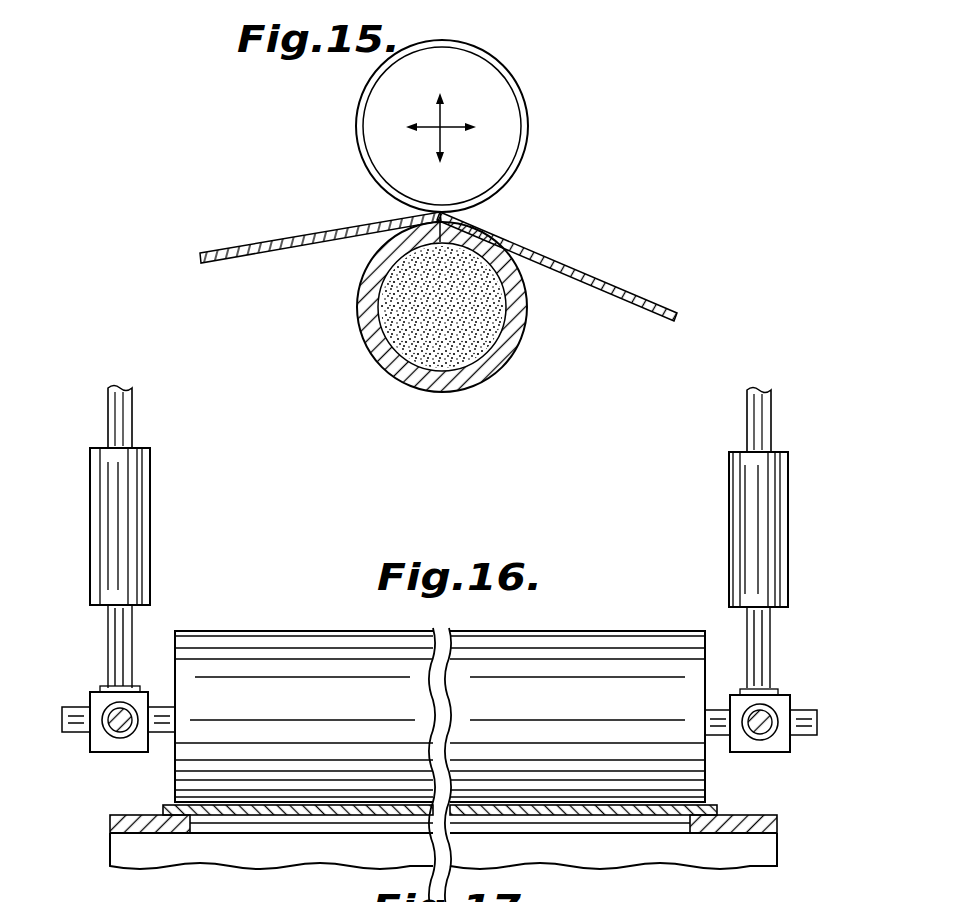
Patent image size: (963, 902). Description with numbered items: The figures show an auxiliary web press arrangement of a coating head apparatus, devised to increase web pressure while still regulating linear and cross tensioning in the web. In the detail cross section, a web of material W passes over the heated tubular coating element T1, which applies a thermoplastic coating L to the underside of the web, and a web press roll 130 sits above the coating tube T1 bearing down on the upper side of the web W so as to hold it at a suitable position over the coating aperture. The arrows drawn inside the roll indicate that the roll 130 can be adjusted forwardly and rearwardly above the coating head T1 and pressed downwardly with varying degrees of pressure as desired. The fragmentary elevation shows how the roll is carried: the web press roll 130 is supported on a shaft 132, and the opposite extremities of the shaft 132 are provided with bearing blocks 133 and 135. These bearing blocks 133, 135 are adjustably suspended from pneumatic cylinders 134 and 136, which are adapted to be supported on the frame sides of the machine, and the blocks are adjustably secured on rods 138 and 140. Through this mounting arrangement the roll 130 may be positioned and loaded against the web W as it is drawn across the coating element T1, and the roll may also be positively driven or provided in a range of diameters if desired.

In FIG. 15, the web press roll 130 is at (524, 163).
In FIG. 16, the web press roll 130 is at (265, 650).
In FIG. 15, the tubular coating element T1 is at (470, 371).
In FIG. 16, the tubular coating element T1 is at (742, 824).
In FIG. 15, the coating L is at (297, 262).
In FIG. 15, the web of material W is at (612, 286).
In FIG. 16, the web of material W is at (264, 816).
In FIG. 16, the pneumatic cylinder 134 is at (135, 505).
In FIG. 16, the pneumatic cylinder 136 is at (742, 500).
In FIG. 16, the bearing block 133 is at (97, 735).
In FIG. 16, the rod 138 is at (119, 733).
In FIG. 16, the bearing block 135 is at (782, 740).
In FIG. 16, the shaft 132 is at (803, 718).
In FIG. 16, the rod 140 is at (759, 735).